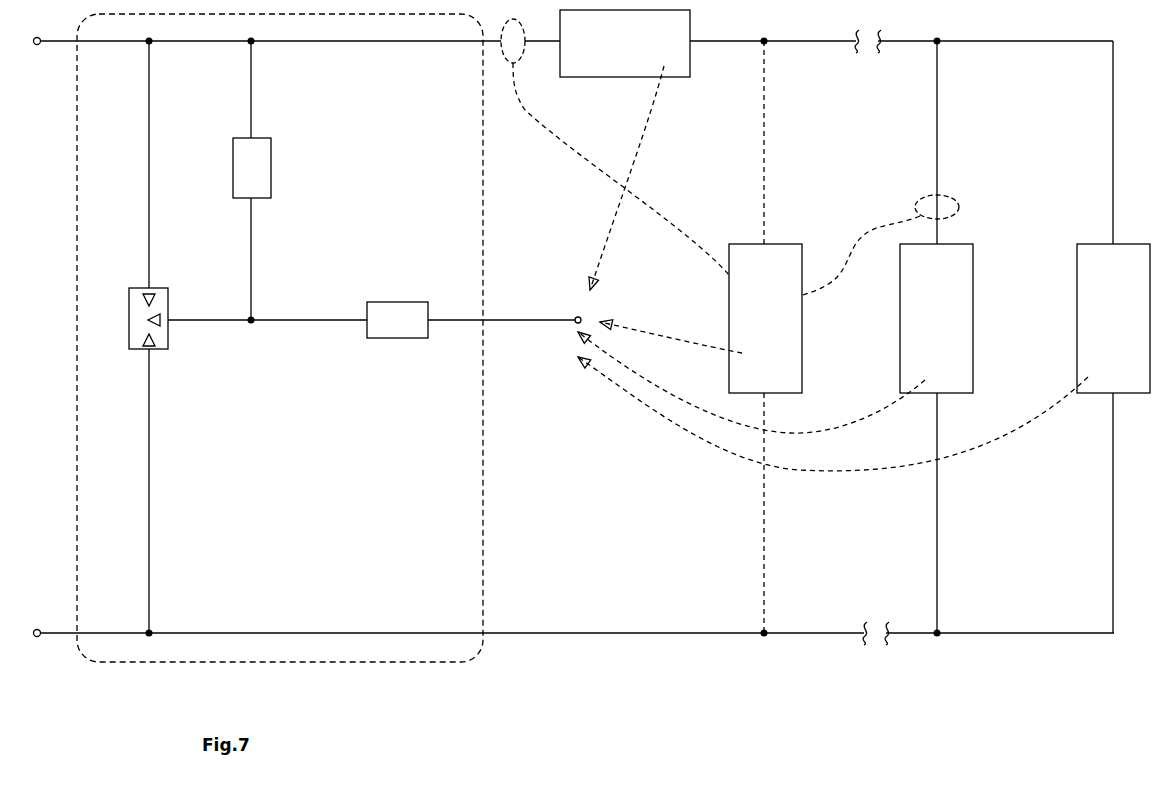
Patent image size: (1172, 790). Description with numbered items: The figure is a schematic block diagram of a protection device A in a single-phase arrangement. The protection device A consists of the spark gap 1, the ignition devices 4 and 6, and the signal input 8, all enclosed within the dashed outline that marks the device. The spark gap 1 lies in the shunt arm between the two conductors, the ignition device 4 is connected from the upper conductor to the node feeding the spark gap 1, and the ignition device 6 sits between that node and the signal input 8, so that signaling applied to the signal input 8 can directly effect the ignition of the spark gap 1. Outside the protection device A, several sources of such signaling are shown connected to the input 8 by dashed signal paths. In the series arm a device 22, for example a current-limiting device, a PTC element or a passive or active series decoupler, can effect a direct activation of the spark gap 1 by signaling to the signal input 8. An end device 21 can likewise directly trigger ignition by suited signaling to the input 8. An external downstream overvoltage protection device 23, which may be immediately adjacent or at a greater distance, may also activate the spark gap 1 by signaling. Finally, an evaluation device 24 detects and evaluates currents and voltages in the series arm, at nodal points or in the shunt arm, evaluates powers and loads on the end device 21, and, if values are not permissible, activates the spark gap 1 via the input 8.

The spark gap 1 is at (170, 354).
The ignition device 4 is at (252, 180).
The ignition device 6 is at (371, 320).
The signal input 8 is at (565, 300).
The end device 21 is at (864, 357).
The device in the series arm 22 is at (615, 150).
The external downstream overvoltage protection device 23 is at (775, 314).
The evaluation device 24 is at (701, 318).
The protection device A is at (150, 661).